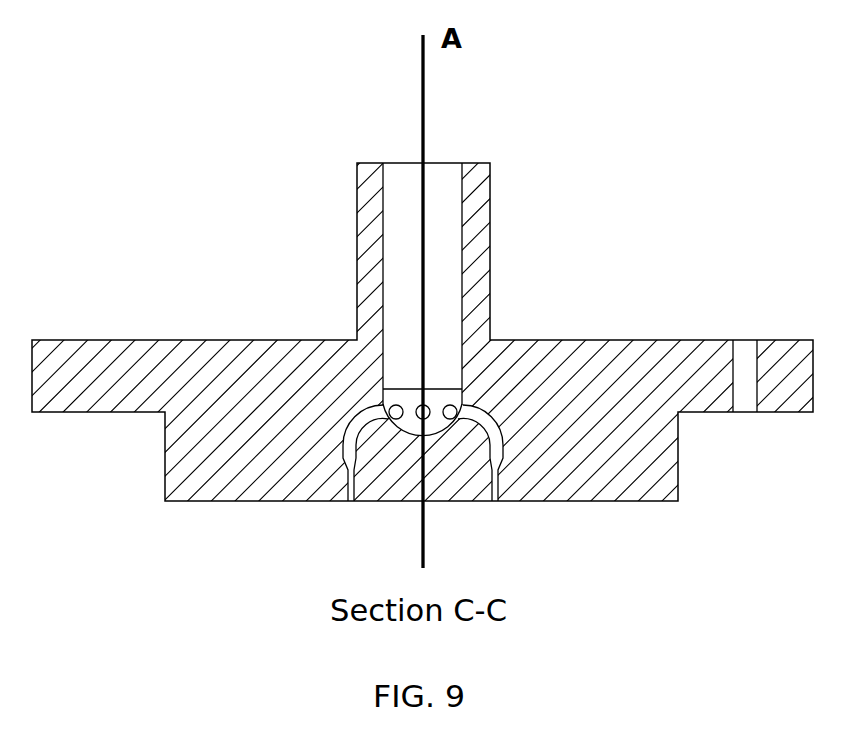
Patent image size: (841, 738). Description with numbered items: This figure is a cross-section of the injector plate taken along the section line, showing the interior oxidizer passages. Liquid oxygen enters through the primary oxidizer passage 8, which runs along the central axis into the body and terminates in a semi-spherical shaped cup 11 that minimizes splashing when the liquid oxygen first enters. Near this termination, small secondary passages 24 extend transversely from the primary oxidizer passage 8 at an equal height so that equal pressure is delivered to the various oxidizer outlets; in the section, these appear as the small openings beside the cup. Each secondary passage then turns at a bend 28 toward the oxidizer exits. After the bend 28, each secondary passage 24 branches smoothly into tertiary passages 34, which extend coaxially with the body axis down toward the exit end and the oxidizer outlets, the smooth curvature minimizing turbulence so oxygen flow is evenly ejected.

The primary oxidizer passage 8 is at (416, 300).
The semi-spherical shaped cup 11 is at (418, 438).
The secondary passages 24 is at (487, 411).
The bend 28 is at (353, 415).
The tertiary passages 34 is at (496, 492).